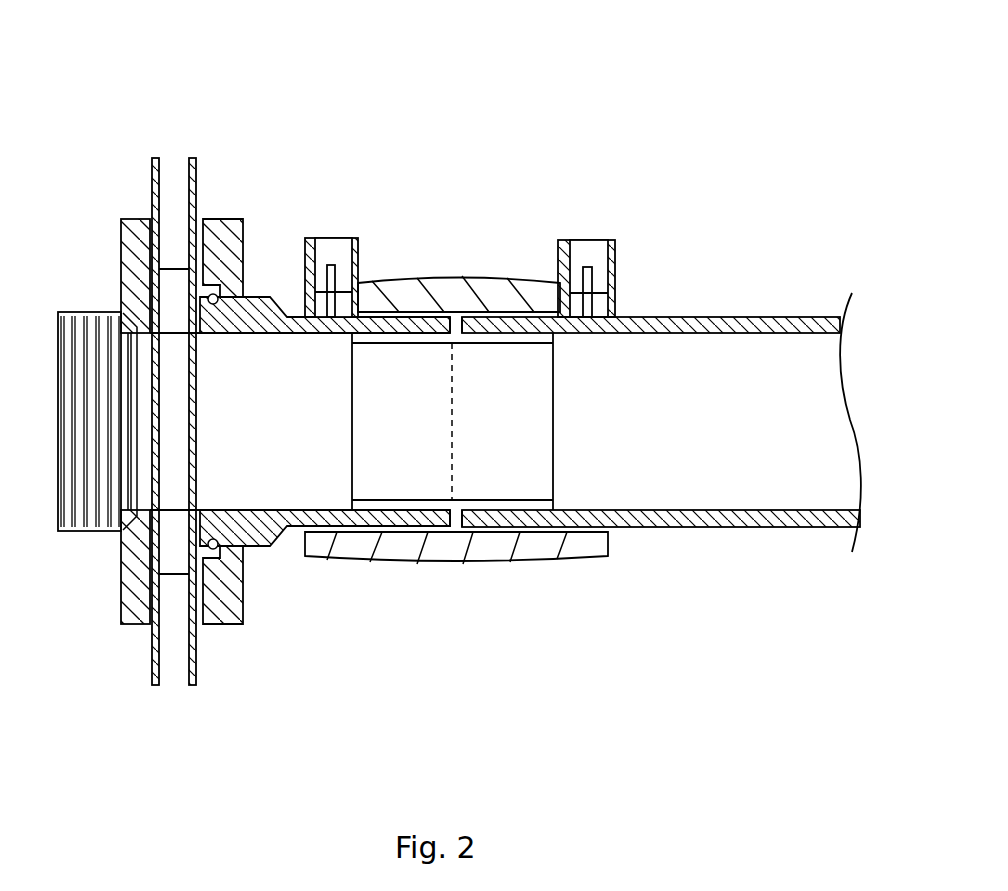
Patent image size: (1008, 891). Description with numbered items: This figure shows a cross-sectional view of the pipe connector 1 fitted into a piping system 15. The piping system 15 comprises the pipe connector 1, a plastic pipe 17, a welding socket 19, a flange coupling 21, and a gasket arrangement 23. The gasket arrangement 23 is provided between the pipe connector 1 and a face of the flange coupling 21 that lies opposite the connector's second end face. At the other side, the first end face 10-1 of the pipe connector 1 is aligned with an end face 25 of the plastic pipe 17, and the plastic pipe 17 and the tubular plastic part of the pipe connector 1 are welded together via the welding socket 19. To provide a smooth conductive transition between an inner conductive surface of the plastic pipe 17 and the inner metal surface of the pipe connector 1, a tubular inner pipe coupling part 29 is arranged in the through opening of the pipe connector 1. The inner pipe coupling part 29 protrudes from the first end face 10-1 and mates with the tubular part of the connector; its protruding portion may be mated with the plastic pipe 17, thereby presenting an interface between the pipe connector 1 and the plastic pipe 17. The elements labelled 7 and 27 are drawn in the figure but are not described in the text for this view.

The pipe connector 1 is at (465, 668).
The flange 7 is at (233, 218).
The first end face 10-1 is at (560, 460).
The piping system 15 is at (492, 104).
The plastic pipe 17 is at (786, 528).
The welding socket 19 is at (513, 282).
The flange coupling 21 is at (121, 585).
The gasket arrangement 23 is at (152, 143).
The end face 25 is at (152, 603).
The spigot end 27 is at (549, 400).
The tubular inner pipe coupling part 29 is at (522, 505).